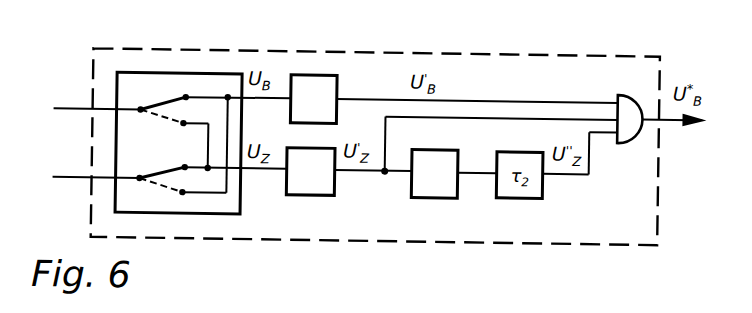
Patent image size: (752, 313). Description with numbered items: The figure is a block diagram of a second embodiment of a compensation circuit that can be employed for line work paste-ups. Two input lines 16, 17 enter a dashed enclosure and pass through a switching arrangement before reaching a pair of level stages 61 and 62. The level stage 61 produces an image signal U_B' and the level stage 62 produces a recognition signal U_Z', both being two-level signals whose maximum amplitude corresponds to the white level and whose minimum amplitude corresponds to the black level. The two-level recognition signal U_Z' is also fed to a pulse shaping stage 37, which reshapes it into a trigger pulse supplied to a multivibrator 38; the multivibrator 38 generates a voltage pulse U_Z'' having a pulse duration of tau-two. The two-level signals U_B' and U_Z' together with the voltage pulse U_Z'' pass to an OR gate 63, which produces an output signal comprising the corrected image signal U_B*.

The first input line (voltage U_B) 16 is at (63, 113).
The second input line (voltage U_Z) 17 is at (63, 182).
The level stage 61 is at (325, 90).
The level stage 62 is at (308, 185).
The pulse shaping stage 37 is at (432, 185).
The multivibrator 38 is at (527, 190).
The OR gate 63 is at (623, 125).